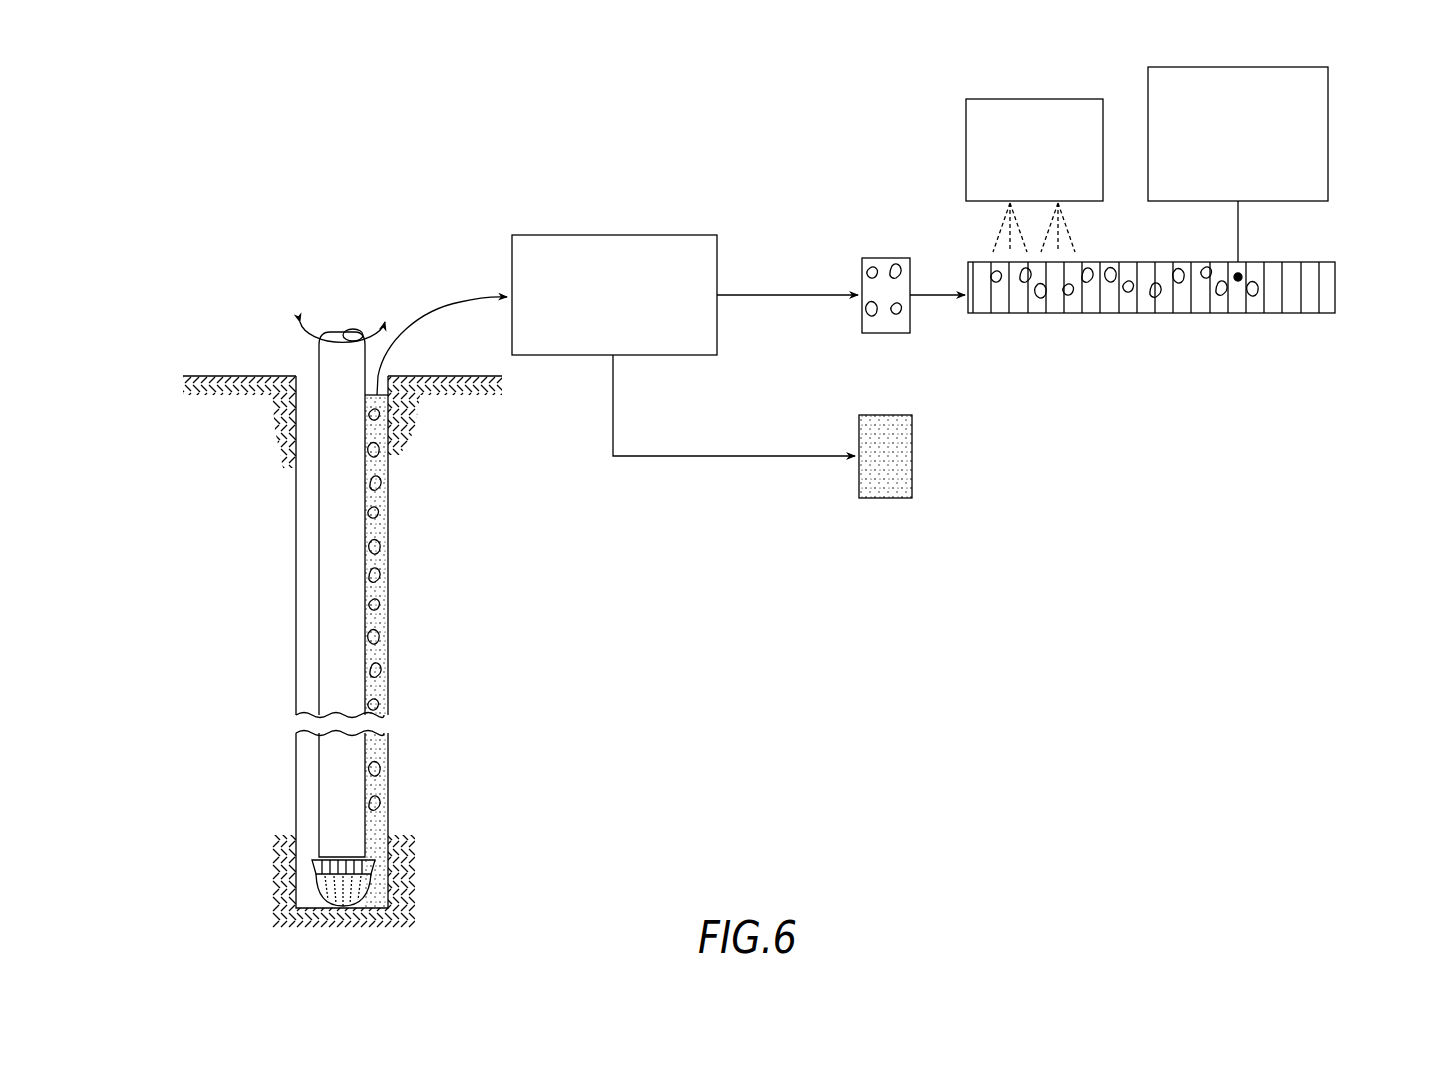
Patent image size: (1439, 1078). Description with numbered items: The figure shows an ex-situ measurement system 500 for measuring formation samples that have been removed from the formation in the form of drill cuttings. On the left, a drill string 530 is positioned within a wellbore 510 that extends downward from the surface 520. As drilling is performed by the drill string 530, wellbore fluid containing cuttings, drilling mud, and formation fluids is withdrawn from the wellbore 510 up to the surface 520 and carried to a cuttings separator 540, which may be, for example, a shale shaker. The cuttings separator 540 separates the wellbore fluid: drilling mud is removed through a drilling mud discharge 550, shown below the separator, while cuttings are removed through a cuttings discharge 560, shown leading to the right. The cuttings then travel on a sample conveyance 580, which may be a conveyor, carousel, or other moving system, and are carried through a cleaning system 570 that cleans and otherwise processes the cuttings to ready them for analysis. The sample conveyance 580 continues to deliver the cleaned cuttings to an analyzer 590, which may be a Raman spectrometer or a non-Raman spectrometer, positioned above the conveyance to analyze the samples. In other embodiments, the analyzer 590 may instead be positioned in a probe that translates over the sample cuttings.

The ex-situ measurement system 500 is at (283, 160).
The wellbore 510 is at (296, 501).
The surface 520 is at (197, 375).
The drill string 530 is at (319, 778).
The cuttings separator 540 is at (670, 235).
The drilling mud discharge 550 is at (736, 456).
The cuttings discharge 560 is at (778, 290).
The cleaning system 570 is at (1003, 98).
The sample conveyance 580 is at (1234, 313).
The analyzer 590 is at (1328, 88).